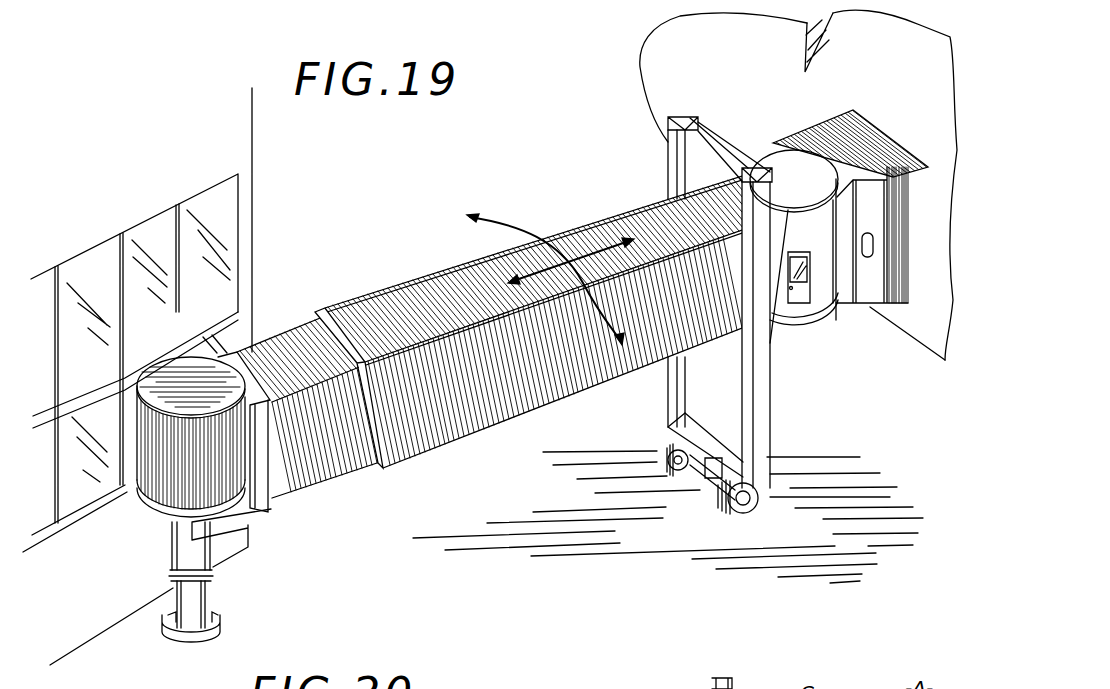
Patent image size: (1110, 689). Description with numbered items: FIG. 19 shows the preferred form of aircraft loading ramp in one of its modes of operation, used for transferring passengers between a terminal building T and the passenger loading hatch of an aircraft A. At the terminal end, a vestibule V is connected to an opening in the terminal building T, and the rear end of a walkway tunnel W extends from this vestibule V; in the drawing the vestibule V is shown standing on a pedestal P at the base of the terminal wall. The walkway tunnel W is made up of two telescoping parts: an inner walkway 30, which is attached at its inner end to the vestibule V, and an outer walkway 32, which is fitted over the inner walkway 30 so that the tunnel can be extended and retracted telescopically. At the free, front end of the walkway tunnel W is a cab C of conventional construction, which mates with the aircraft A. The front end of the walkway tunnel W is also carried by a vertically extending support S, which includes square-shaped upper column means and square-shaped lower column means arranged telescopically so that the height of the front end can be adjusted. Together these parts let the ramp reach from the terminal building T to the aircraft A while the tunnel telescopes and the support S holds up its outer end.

The terminal building T is at (137, 376).
The aircraft A is at (798, 185).
The vestibule V is at (190, 366).
The pedestal support column P is at (206, 578).
The walkway tunnel W is at (490, 408).
The inner walkway 30 is at (317, 487).
The outer walkway 32 is at (583, 398).
The support S is at (762, 362).
The cab C is at (820, 305).